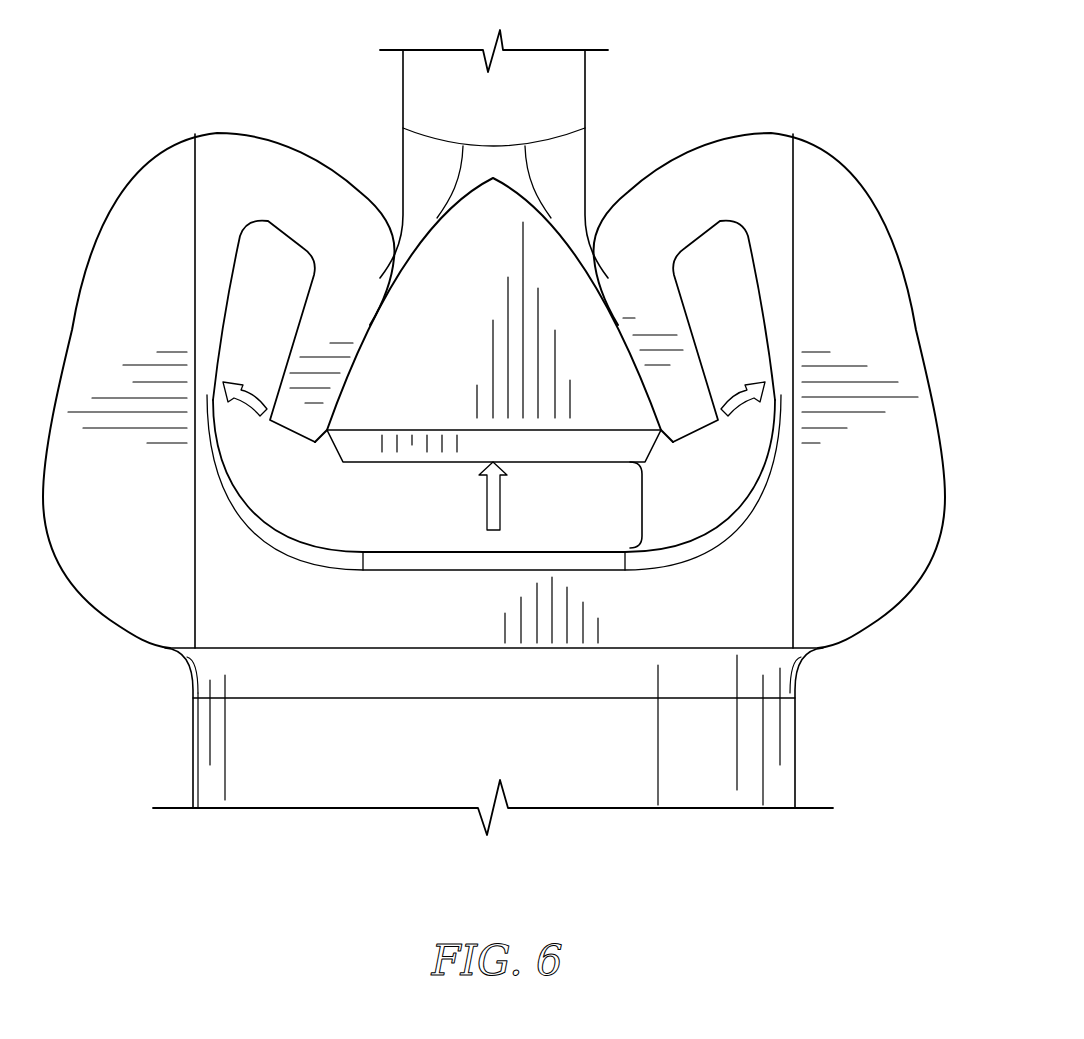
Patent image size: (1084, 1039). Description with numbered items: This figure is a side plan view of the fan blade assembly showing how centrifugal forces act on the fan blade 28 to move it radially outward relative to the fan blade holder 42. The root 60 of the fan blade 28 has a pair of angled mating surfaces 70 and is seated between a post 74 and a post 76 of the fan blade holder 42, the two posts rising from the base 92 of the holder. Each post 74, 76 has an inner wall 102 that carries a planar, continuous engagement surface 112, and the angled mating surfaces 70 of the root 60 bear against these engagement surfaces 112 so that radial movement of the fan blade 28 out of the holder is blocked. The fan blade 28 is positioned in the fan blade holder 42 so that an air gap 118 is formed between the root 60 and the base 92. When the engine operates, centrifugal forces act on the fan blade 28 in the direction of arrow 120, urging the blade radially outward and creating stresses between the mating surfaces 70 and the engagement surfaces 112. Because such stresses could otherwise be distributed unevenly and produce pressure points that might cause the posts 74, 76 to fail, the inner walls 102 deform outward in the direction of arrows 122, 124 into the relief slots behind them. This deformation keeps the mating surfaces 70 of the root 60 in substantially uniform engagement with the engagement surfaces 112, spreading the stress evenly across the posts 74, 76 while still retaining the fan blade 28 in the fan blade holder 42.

The fan blade 28 is at (610, 134).
The fan blade holder 42 is at (914, 241).
The root 60 is at (595, 330).
The angled mating surfaces 70 is at (378, 312).
The post 74 is at (250, 153).
The post 76 is at (820, 160).
The base 92 is at (335, 608).
The inner wall 102 is at (313, 315).
The engagement surface 112 is at (348, 377).
The air gap 118 is at (640, 503).
The arrow 120 is at (500, 495).
The arrow 122 is at (245, 412).
The arrow 124 is at (743, 393).